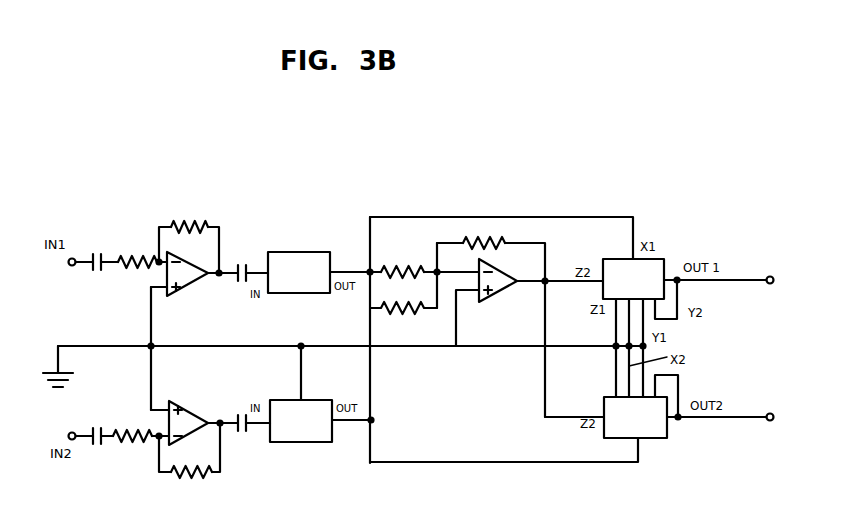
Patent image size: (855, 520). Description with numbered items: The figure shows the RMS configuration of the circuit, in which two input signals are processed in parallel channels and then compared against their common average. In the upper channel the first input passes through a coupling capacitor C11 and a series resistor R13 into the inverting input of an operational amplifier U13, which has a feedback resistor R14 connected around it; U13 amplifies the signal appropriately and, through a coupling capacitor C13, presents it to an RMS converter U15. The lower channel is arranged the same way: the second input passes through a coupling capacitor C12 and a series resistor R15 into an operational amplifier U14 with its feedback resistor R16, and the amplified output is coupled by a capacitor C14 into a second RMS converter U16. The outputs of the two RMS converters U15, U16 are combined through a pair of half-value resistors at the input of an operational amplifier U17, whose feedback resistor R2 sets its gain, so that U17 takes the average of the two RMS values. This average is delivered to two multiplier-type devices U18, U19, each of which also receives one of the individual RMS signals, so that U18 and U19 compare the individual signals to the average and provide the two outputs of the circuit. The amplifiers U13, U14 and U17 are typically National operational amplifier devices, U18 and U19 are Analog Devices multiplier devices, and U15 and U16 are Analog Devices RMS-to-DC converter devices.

The input coupling capacitor C11 is at (99, 252).
The input resistor R13 is at (137, 251).
The feedback resistor R14 is at (189, 236).
The amplifier U13 is at (187, 283).
The coupling capacitor C13 is at (235, 258).
The RMS converter U15 is at (299, 263).
The feedback resistor R2 is at (491, 251).
The averaging amplifier U17 is at (498, 291).
The comparator U18 is at (633, 279).
The comparator U19 is at (635, 417).
The input coupling capacitor C12 is at (99, 421).
The input resistor R15 is at (132, 450).
The feedback resistor R16 is at (189, 463).
The amplifier U14 is at (188, 412).
The coupling capacitor C14 is at (239, 438).
The RMS converter U16 is at (301, 433).